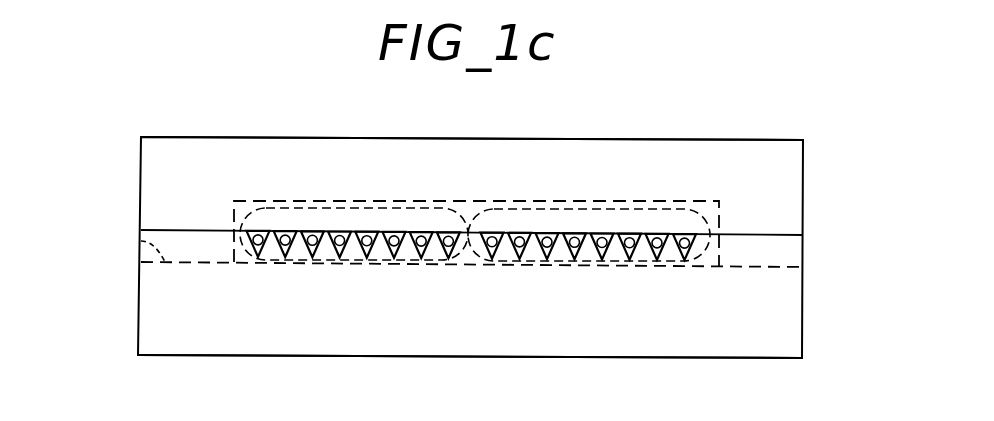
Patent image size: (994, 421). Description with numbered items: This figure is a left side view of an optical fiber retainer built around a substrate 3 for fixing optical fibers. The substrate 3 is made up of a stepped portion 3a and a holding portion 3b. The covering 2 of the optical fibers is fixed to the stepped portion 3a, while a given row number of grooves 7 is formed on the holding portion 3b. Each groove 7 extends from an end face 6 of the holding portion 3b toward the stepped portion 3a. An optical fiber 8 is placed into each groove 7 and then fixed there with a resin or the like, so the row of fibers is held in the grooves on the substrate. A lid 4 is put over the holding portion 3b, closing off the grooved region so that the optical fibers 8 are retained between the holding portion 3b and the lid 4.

The covering 2 is at (338, 201).
The substrate 3 is at (810, 262).
The stepped portion 3a is at (139, 241).
The holding portion 3b is at (782, 315).
The lid 4 is at (514, 155).
The end face 6 is at (581, 340).
The groove 7 is at (378, 263).
The optical fiber 8 is at (405, 263).